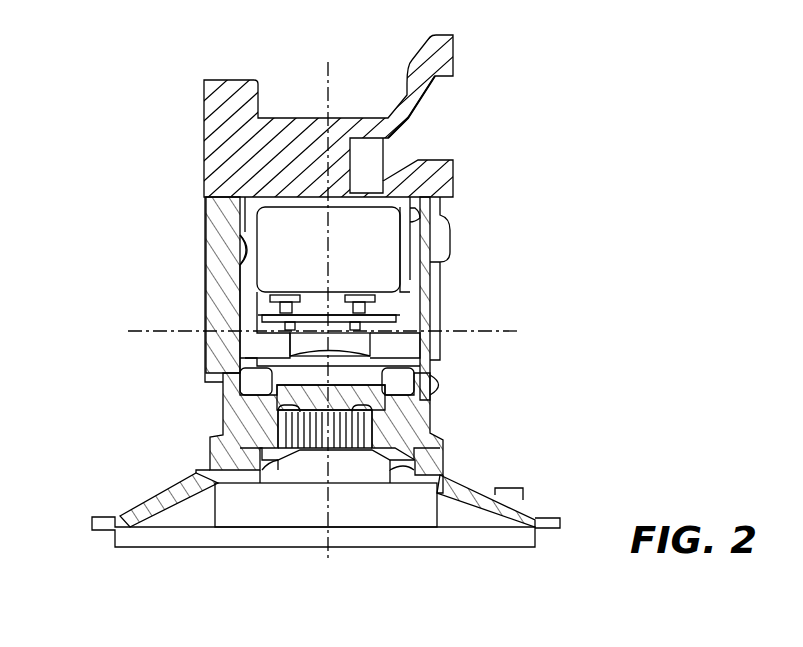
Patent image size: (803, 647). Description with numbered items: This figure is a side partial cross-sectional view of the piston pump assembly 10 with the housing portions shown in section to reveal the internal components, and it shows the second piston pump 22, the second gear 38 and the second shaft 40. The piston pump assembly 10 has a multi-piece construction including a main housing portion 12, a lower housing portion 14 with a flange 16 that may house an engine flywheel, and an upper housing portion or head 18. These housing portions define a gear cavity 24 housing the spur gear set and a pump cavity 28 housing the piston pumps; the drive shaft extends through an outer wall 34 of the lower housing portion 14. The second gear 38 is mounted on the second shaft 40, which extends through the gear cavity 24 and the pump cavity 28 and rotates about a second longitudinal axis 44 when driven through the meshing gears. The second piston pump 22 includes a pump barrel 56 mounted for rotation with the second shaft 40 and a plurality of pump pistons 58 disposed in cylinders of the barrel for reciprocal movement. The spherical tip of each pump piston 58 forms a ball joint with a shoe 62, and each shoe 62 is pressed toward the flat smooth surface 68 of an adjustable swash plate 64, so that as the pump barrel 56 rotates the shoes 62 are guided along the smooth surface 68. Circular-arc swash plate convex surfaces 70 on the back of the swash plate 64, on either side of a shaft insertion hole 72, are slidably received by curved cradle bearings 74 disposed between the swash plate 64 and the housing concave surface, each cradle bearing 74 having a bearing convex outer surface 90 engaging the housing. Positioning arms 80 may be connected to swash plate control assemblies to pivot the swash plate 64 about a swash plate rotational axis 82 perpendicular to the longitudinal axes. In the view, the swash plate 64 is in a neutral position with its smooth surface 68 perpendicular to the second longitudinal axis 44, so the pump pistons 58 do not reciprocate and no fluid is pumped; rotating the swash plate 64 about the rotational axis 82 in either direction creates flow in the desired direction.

The piston pump assembly 10 is at (143, 126).
The main housing portion 12 is at (218, 212).
The lower housing portion 14 is at (403, 473).
The flange 16 is at (180, 542).
The upper housing portion or head 18 is at (235, 103).
The second piston pump 22 is at (290, 215).
The gear cavity 24 is at (380, 425).
The pump cavity 28 is at (416, 236).
The outer wall 34 is at (300, 455).
The second gear 38 is at (245, 440).
The second shaft 40 is at (242, 366).
The second longitudinal axis 44 is at (335, 80).
The pump barrel 56 is at (395, 225).
The pump pistons 58 is at (300, 300).
The shoe 62 is at (268, 310).
The adjustable swash plate 64 is at (350, 345).
The smooth surface 68 is at (400, 322).
The swash plate convex surfaces 70 is at (367, 478).
The shaft insertion hole 72 is at (280, 412).
The cradle bearings 74 is at (258, 382).
The positioning arms 80 is at (453, 193).
The swash plate rotational axis 82 is at (140, 331).
The bearing convex outer surface 90 is at (237, 253).